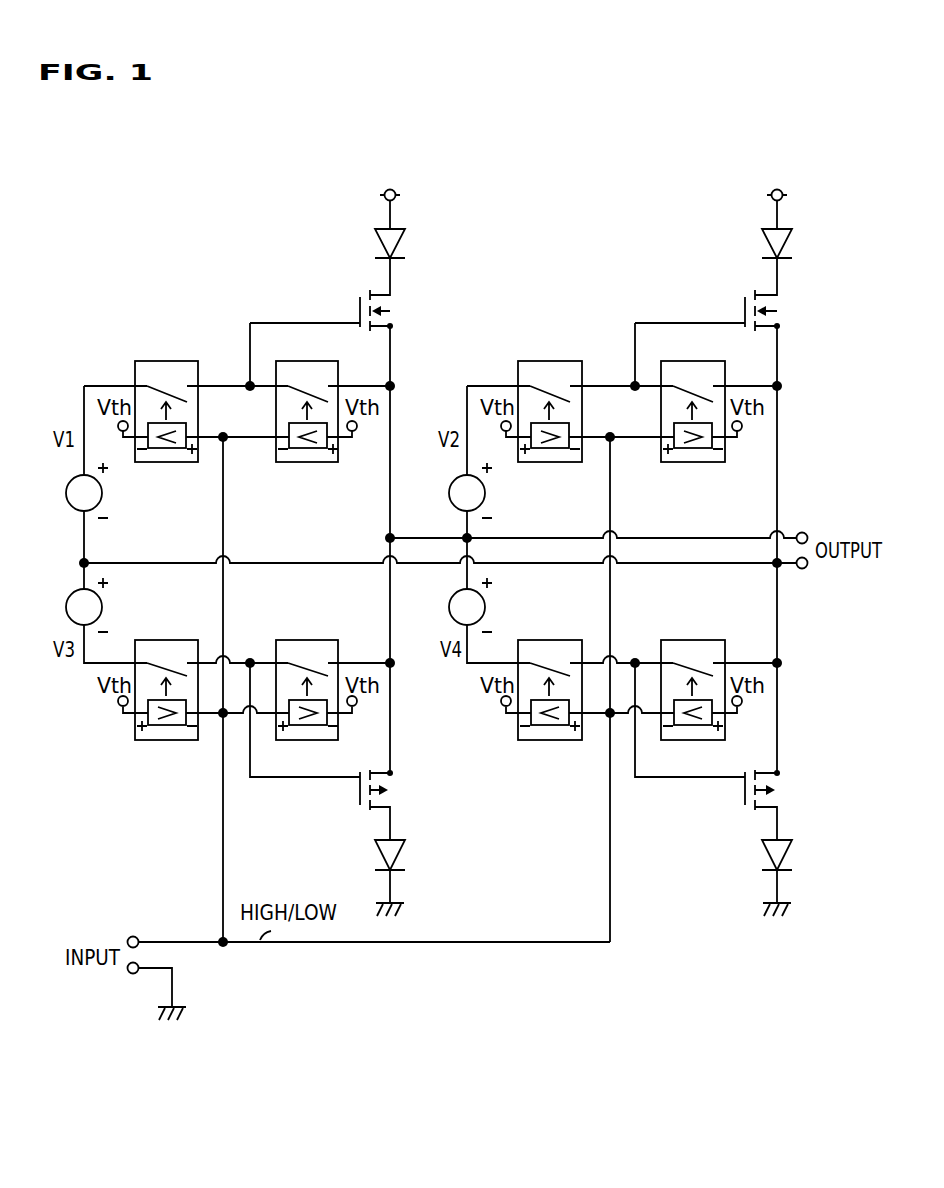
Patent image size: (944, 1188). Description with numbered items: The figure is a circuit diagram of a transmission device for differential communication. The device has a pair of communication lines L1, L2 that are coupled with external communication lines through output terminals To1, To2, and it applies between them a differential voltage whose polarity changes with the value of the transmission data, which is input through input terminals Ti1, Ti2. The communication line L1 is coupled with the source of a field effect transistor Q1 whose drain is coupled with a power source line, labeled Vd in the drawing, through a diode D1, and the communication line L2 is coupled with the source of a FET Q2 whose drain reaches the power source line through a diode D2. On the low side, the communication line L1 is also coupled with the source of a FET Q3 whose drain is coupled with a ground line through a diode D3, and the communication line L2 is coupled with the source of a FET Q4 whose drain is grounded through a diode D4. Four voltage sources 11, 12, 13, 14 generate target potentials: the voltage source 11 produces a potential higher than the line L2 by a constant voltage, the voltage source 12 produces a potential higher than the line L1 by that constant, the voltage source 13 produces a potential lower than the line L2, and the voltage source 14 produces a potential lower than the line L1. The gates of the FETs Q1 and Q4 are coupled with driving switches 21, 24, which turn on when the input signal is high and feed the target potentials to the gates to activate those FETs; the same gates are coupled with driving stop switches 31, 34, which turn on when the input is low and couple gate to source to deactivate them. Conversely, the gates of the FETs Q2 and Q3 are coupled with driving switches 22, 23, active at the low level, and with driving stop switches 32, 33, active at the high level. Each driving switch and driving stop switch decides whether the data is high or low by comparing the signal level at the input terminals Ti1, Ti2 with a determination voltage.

The voltage source 11 is at (102, 495).
The voltage source 12 is at (485, 495).
The voltage source 13 is at (102, 609).
The voltage source 14 is at (485, 609).
The driving switch 21 is at (173, 343).
The driving switch 22 is at (542, 360).
The driving switch 23 is at (158, 639).
The driving switch 24 is at (542, 639).
The driving stop switch 31 is at (314, 343).
The driving stop switch 32 is at (685, 360).
The driving stop switch 33 is at (299, 639).
The driving stop switch 34 is at (685, 639).
The diode D1 is at (396, 246).
The diode D2 is at (783, 246).
The diode D3 is at (397, 856).
The diode D4 is at (784, 856).
The field effect transistor Q1 is at (392, 314).
The field effect transistor Q2 is at (779, 314).
The field effect transistor Q3 is at (392, 786).
The field effect transistor Q4 is at (779, 786).
The communication line L1 is at (657, 538).
The communication line L2 is at (657, 563).
The output terminal To1 is at (802, 522).
The output terminal To2 is at (802, 578).
The input terminal Ti1 is at (132, 928).
The input terminal Ti2 is at (132, 985).
The power supply terminal Vd is at (567, 196).